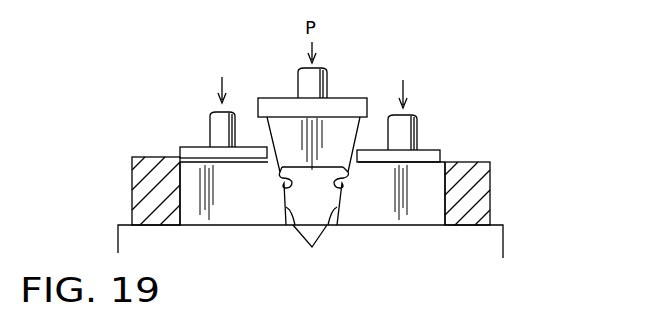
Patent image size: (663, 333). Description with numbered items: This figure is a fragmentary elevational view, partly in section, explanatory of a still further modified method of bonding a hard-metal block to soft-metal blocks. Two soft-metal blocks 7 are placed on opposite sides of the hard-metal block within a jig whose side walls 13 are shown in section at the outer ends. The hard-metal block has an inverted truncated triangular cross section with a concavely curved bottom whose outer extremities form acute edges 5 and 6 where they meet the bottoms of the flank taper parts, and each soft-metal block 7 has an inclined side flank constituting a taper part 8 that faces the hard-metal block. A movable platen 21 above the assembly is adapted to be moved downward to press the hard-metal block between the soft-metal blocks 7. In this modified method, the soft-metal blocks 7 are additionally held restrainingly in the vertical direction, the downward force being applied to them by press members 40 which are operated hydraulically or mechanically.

The acute edge 5 is at (277, 178).
The acute edge 6 is at (352, 183).
The soft-metal block 7 is at (199, 218).
The taper part 8 is at (310, 248).
The side wall 13 is at (138, 175).
The movable platen 21 is at (343, 107).
The press member 40 is at (192, 153).